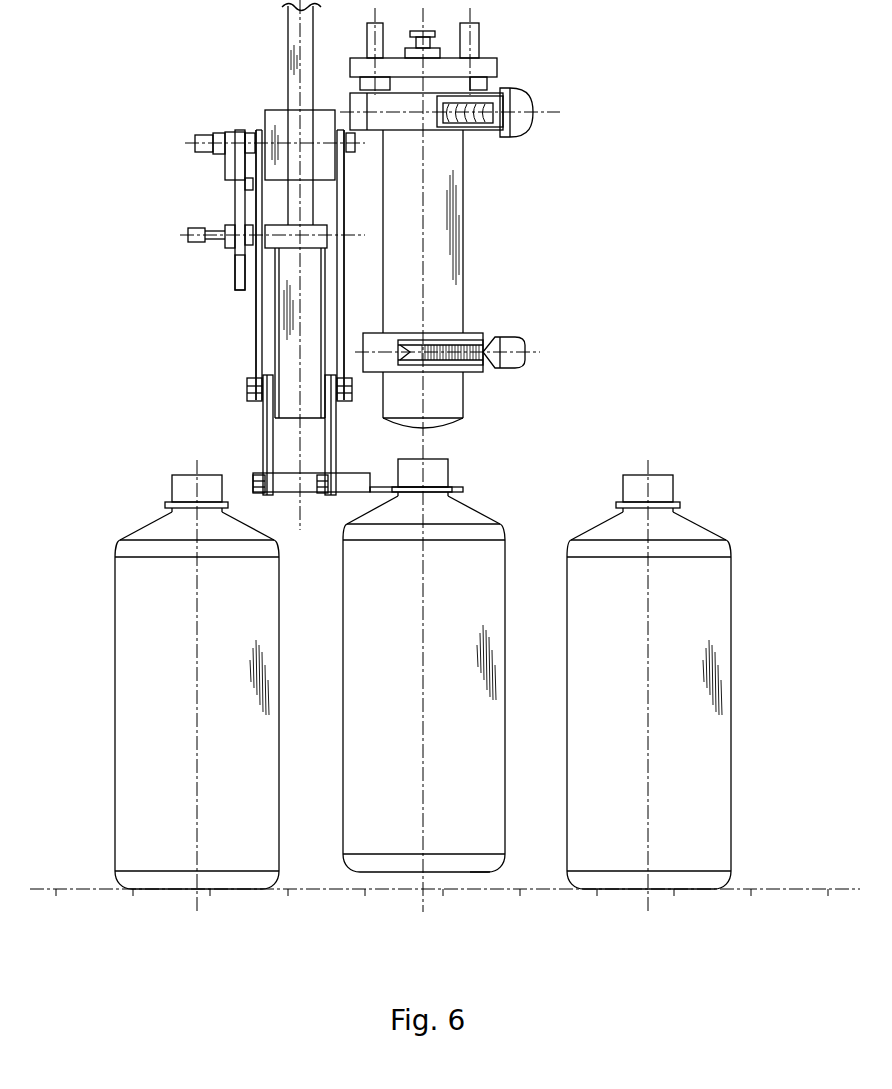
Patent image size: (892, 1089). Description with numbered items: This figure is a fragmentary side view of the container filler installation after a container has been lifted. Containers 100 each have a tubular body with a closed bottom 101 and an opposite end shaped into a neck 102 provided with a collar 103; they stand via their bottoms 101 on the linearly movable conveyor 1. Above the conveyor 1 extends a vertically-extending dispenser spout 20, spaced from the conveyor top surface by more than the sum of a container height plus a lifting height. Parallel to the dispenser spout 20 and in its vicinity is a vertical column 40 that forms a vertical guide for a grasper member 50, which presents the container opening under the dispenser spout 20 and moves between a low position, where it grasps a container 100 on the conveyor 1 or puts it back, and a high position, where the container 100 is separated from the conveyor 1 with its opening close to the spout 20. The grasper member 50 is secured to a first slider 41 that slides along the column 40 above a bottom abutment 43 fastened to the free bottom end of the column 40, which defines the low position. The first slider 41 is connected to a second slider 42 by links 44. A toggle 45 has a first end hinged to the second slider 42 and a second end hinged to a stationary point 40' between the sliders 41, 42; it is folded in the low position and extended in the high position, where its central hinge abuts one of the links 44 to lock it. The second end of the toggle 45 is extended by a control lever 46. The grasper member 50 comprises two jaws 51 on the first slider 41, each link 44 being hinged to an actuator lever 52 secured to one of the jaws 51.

The conveyor 1 is at (765, 889).
The dispenser spout 20 is at (462, 297).
The vertical column 40 is at (277, 115).
The stationary point 40' is at (187, 228).
The first slider 41 is at (280, 362).
The second slider 42 is at (268, 110).
The bottom abutment 43 is at (322, 226).
The links 44 is at (258, 322).
The toggle 45 is at (238, 215).
The control lever 46 is at (238, 280).
The grasper member 50 is at (205, 400).
The jaws 51 is at (309, 497).
The actuator lever 52 is at (265, 432).
The container 100 is at (274, 800).
The bottom 101 is at (480, 872).
The neck 102 is at (442, 460).
The collar 103 is at (453, 490).